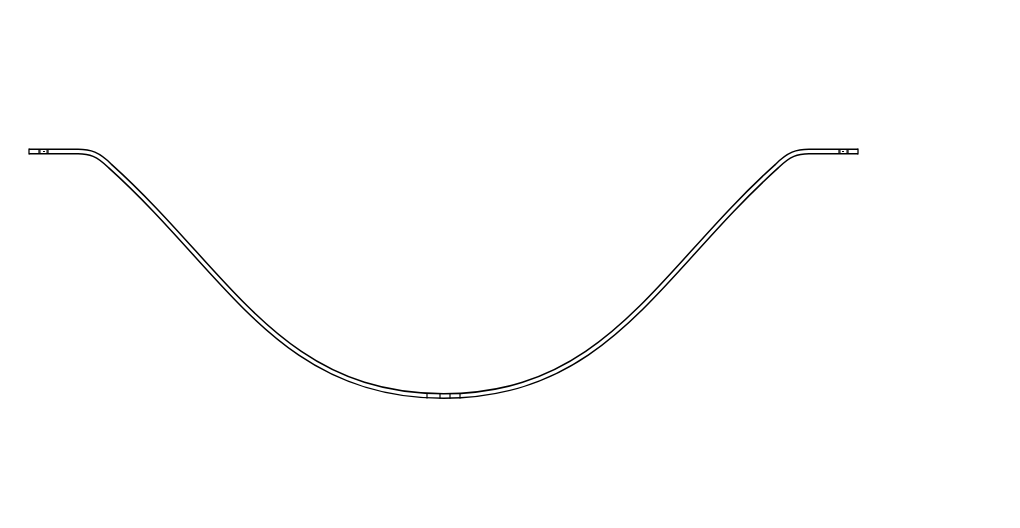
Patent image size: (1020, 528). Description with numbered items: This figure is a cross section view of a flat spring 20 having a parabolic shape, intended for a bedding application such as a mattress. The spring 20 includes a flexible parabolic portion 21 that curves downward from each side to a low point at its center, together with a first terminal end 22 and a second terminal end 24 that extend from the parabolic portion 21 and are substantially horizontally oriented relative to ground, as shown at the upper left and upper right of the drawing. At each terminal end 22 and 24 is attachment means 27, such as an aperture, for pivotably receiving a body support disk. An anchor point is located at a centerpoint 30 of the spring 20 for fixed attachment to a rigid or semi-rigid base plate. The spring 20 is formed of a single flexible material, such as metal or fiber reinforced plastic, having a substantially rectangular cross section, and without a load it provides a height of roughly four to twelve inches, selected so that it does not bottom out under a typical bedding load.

The flat spring 20 is at (586, 91).
The flexible parabolic portion 21 is at (634, 318).
The first terminal end 22 is at (792, 138).
The second terminal end 24 is at (29, 138).
The attachment means 27 is at (44, 156).
The centerpoint 30 is at (441, 392).